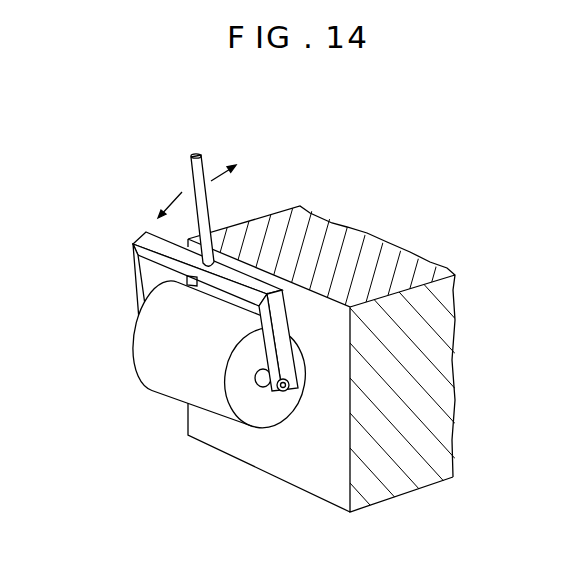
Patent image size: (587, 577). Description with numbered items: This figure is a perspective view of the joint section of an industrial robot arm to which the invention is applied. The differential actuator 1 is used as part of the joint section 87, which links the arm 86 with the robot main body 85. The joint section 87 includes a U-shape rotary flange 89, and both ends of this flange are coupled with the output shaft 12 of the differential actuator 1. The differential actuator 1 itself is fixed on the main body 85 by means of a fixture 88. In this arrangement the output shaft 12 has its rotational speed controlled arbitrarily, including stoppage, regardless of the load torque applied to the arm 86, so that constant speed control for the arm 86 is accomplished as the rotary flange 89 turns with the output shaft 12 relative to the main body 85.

The differential actuator 1 is at (162, 375).
The output shaft 12 is at (256, 388).
The robot main body 85 is at (383, 257).
The arm 86 is at (190, 173).
The joint section 87 is at (125, 309).
The fixture 88 is at (303, 395).
The U-shape rotary flange 89 is at (130, 240).